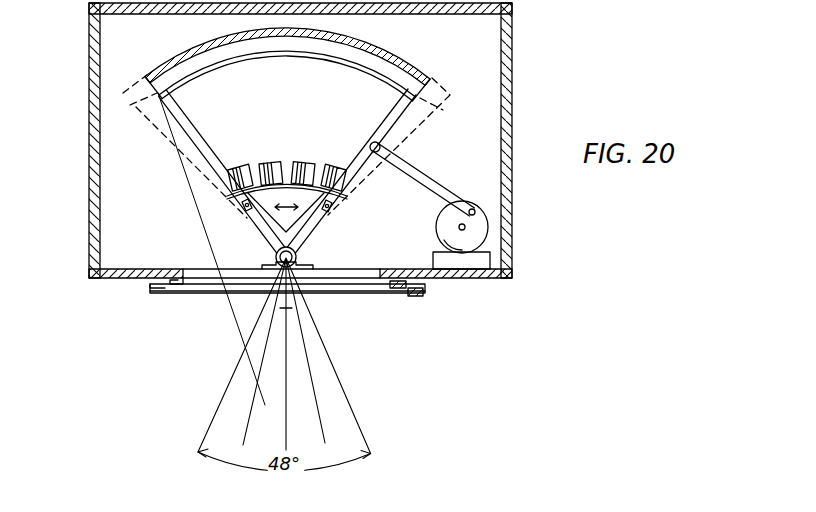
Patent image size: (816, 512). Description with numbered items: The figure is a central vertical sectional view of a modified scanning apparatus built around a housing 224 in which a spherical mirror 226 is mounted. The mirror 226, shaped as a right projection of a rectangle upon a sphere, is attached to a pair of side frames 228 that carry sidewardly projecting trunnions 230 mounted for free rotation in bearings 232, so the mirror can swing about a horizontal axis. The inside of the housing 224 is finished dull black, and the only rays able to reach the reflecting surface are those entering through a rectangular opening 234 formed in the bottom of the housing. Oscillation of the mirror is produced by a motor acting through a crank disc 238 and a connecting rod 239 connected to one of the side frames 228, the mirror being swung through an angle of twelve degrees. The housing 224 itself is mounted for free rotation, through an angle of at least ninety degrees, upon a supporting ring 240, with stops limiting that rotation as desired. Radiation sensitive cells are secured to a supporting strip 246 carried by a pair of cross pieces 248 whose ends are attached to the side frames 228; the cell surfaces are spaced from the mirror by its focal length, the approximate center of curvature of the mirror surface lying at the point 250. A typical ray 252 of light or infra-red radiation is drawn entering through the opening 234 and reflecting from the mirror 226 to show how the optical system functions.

The housing 224 is at (513, 32).
The spherical mirror 226 is at (370, 54).
The side frames 228 is at (322, 220).
The trunnions 230 is at (298, 259).
The bearings 232 is at (276, 258).
The rectangular opening 234 is at (367, 270).
The crank disc 238 is at (482, 222).
The connecting rod 239 is at (418, 175).
The supporting ring 240 is at (423, 294).
The supporting strip 246 is at (253, 222).
The cross pieces 248 is at (240, 205).
The center of curvature point 250 is at (288, 312).
The typical ray 252 is at (229, 305).